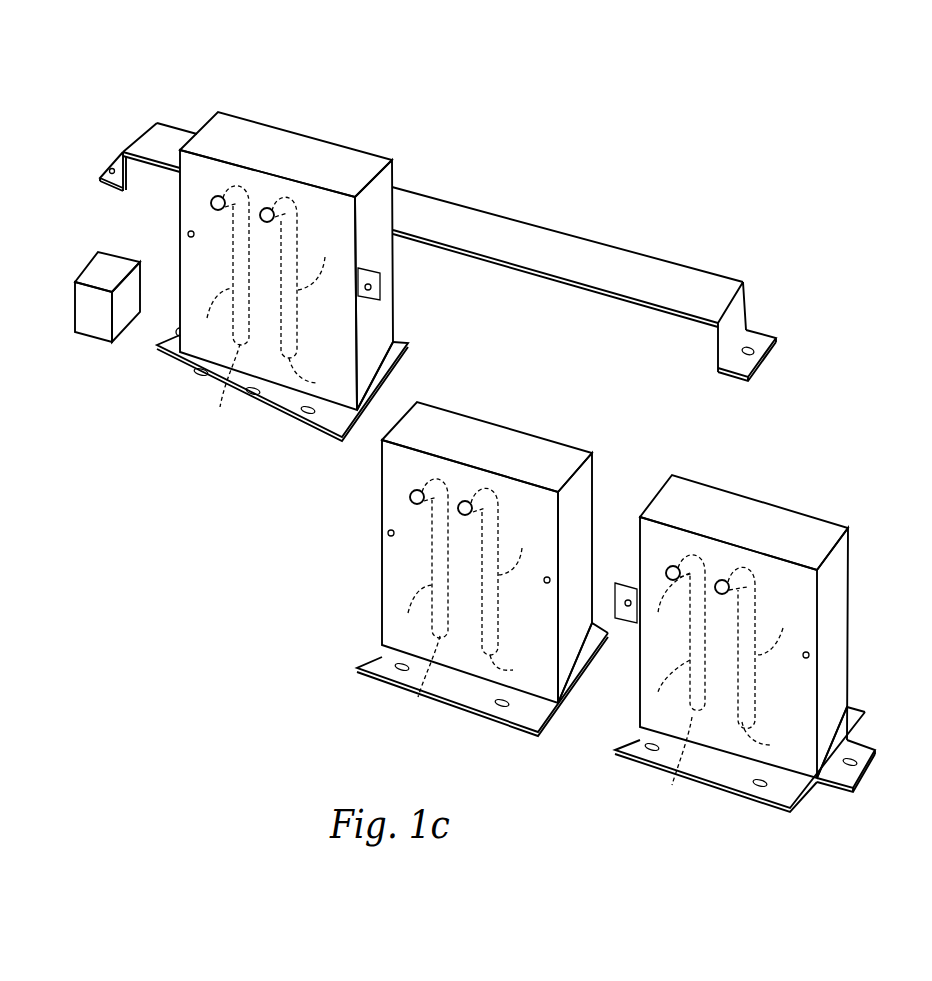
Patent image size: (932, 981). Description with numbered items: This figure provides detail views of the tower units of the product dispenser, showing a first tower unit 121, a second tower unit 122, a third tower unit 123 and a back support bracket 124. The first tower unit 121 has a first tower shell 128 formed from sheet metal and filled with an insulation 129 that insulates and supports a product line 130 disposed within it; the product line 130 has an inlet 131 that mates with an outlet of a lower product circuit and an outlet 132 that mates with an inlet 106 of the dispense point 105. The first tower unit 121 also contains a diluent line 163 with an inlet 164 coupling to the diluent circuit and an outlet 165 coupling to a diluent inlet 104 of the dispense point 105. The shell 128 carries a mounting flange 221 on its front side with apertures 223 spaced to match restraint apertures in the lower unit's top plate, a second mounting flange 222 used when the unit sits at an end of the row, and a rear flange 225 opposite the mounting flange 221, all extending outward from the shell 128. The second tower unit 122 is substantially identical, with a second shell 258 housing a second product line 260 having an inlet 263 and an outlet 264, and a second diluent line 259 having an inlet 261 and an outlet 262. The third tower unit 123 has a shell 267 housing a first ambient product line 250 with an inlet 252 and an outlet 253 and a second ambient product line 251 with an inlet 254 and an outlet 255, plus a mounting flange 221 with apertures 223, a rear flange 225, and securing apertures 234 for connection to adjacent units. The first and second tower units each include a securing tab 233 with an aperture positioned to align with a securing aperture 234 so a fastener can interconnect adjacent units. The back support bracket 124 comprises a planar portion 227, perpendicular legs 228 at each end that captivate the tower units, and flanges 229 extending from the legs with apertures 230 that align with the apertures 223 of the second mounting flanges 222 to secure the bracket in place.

The diluent inlet 104 is at (134, 265).
The dispense point 105 is at (100, 283).
The inlet 106 is at (105, 250).
The first tower unit 121 is at (487, 416).
The second tower unit 122 is at (755, 616).
The third tower unit 123 is at (559, 521).
The back support bracket 124 is at (443, 270).
The first tower shell 128 is at (381, 323).
The insulation 129 is at (485, 416).
The product line 130 is at (223, 265).
The inlet 131 is at (223, 391).
The outlet 132 is at (213, 196).
The diluent line 163 is at (307, 277).
The inlet 164 is at (321, 377).
The outlet 165 is at (268, 208).
The mounting flange 221 is at (375, 658).
The second mounting flange 222 is at (157, 340).
The apertures 223 is at (178, 332).
The rear flange 225 is at (410, 353).
The planar portion 227 is at (480, 224).
The perpendicular legs 228 is at (137, 166).
The flanges 229 is at (762, 363).
The apertures 230 is at (122, 172).
The securing tab 233 is at (386, 298).
The securing aperture 234 is at (385, 533).
The first ambient product line 250 is at (421, 561).
The second ambient product line 251 is at (516, 547).
The inlet 252 is at (422, 671).
The outlet 253 is at (413, 490).
The inlet 254 is at (510, 585).
The outlet 255 is at (467, 500).
The second shell 258 is at (838, 687).
The second diluent line 259 is at (675, 634).
The second product line 260 is at (761, 647).
The inlet 261 is at (676, 765).
The outlet 262 is at (666, 606).
The inlet 263 is at (776, 740).
The outlet 264 is at (722, 581).
The shell 267 is at (495, 422).